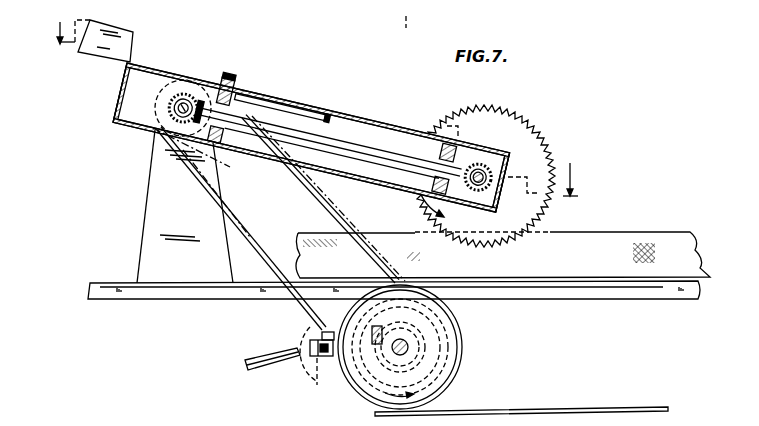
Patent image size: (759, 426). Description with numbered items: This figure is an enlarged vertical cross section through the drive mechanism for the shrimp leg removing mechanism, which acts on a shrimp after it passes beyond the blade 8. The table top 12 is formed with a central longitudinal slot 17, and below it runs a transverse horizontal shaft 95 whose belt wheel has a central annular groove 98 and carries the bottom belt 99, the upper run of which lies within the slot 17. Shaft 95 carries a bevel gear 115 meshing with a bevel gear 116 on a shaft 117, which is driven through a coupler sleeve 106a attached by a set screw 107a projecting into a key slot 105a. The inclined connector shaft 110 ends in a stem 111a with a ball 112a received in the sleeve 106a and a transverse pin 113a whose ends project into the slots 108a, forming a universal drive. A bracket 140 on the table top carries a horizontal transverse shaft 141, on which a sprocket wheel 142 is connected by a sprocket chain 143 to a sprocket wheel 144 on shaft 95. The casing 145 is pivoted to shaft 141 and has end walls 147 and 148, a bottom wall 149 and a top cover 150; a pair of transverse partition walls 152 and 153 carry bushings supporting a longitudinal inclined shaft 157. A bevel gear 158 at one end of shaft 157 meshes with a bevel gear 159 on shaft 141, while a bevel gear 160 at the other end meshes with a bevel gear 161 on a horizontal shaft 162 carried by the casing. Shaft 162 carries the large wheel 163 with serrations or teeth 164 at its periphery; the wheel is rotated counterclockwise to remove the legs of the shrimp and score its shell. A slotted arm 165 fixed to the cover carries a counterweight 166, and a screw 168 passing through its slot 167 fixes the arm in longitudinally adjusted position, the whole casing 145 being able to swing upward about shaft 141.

The blade 8 is at (308, 109).
The table top wall 12 is at (118, 283).
The central longitudinal slot 17 is at (240, 295).
The transverse horizontal shaft 95 is at (405, 347).
The central annular groove 98 is at (455, 374).
The bottom belt 99 is at (562, 387).
The key slot 105a is at (290, 342).
The coupler sleeve 106a is at (305, 341).
The set screw 107a is at (325, 333).
The longitudinal slots 108a is at (310, 358).
The inclined connector shaft 110 is at (246, 362).
The stem 111a is at (306, 357).
The ball 112a is at (320, 358).
The transverse pin 113a is at (330, 365).
The bevel gear 115 is at (440, 352).
The bevel gear 116 is at (370, 400).
The shaft 117 is at (378, 326).
The bracket 140 is at (152, 190).
The horizontal transverse shaft 141 is at (195, 95).
The sprocket wheel 142 is at (247, 167).
The sprocket chain 143 is at (305, 199).
The sprocket wheel 144 is at (430, 303).
The casing 145 is at (130, 130).
The end wall 147 is at (533, 170).
The end wall 148 is at (125, 86).
The bottom wall 149 is at (363, 183).
The top cover 150 is at (366, 120).
The transverse partition wall 152 is at (240, 109).
The transverse partition wall 153 is at (440, 147).
The longitudinal inclined shaft 157 is at (335, 137).
The bevel gear 158 is at (208, 100).
The bevel gear 159 is at (184, 93).
The bevel gear 160 is at (473, 165).
The bevel gear 161 is at (483, 170).
The shaft 162 is at (500, 160).
The large wheel 163 is at (567, 153).
The serrations or teeth 164 is at (547, 222).
The slotted arm 165 is at (140, 70).
The counterweight 166 is at (80, 52).
The slot 167 is at (258, 90).
The screw 168 is at (240, 82).